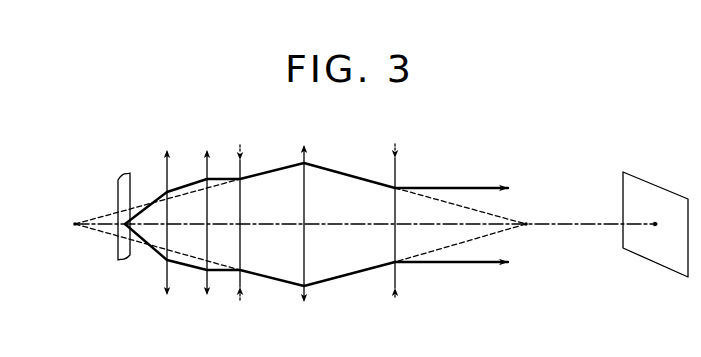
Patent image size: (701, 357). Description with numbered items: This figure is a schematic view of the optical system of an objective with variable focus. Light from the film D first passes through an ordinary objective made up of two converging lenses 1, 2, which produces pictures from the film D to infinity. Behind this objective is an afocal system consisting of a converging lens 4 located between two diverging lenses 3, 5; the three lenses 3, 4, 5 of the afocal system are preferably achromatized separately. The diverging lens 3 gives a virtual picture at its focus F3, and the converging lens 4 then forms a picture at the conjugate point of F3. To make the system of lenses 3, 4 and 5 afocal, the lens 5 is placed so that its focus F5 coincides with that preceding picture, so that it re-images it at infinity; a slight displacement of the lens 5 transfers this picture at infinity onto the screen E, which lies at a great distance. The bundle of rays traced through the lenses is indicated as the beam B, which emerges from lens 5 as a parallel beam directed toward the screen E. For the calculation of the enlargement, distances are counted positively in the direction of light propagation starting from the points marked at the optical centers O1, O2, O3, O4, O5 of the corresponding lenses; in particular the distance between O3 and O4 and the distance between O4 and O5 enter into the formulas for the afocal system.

The light beam B is at (340, 156).
The film D is at (124, 182).
The screen E is at (649, 190).
The focus of diverging lens 3 F3 is at (75, 224).
The focus of lens 5 F5 is at (526, 224).
The converging lens 1 is at (166, 268).
The converging lens 2 is at (206, 278).
The diverging lens 3 is at (241, 281).
The converging lens 4 is at (305, 290).
The diverging lens 5 is at (396, 275).
The optical center of lens 1 O1 is at (167, 224).
The optical center of lens 2 O2 is at (207, 224).
The optical center of lens 3 O3 is at (240, 224).
The optical center of lens 4 O4 is at (304, 224).
The optical center of lens 5 O5 is at (395, 224).